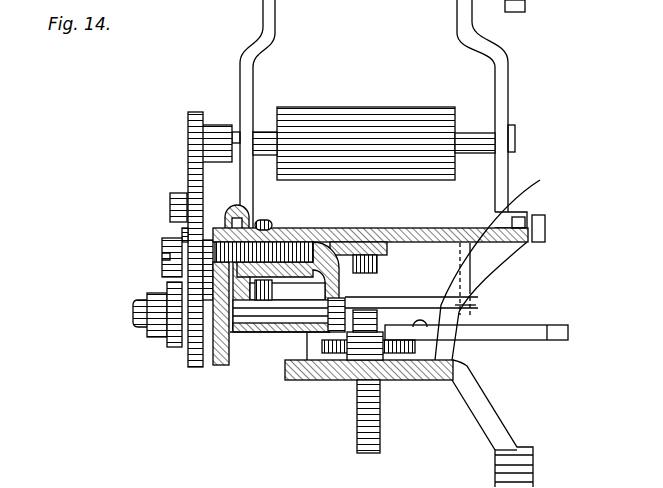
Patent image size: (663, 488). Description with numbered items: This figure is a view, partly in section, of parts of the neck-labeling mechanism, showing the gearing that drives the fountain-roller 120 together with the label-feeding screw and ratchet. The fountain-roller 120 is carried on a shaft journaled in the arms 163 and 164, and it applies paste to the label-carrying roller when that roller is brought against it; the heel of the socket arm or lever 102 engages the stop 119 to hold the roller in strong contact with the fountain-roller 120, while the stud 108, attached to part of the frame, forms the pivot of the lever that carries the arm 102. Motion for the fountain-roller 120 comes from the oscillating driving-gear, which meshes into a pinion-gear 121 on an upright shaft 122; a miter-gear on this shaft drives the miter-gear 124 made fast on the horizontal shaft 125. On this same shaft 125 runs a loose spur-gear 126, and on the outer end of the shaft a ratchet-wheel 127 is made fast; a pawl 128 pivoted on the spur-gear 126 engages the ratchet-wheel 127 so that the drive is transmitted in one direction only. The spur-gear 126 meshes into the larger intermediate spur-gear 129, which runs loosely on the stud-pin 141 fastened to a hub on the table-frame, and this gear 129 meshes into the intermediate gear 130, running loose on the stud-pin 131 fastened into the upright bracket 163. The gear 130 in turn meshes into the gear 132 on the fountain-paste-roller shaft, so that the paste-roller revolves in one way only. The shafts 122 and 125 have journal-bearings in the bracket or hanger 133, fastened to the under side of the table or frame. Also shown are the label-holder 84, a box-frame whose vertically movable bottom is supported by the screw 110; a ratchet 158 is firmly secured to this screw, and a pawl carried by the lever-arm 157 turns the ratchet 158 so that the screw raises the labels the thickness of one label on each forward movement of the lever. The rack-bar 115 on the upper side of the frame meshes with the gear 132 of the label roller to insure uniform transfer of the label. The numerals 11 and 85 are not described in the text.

The motor housing 11 is at (341, 12).
The socket arm or lever 102 is at (546, 0).
The stud 108 is at (533, 462).
The screw 110 is at (380, 405).
The rack-bar 115 is at (538, 195).
The stop 119 is at (547, 222).
The fountain-roller 120 is at (332, 120).
The pinion-gear 121 is at (332, 240).
The upright shaft 122 is at (272, 226).
The miter-gear 124 is at (225, 366).
The horizontal shaft 125 is at (296, 240).
The spur-gear 126 is at (192, 372).
The ratchet-wheel 127 is at (163, 340).
The pawl 128 is at (175, 356).
The intermediate spur-gear 129 is at (181, 232).
The intermediate gear 130 is at (188, 182).
The stud-pin 131 is at (170, 207).
The gear 132 is at (190, 112).
The bracket or hanger 133 is at (250, 336).
The stud-pin 141 is at (162, 252).
The lever-arm 157 is at (490, 336).
The ratchet 158 is at (405, 380).
The arm or upright bracket 163 is at (240, 74).
The arm 164 is at (508, 80).
The label-holder 84 is at (472, 266).
The plate 85 is at (415, 234).